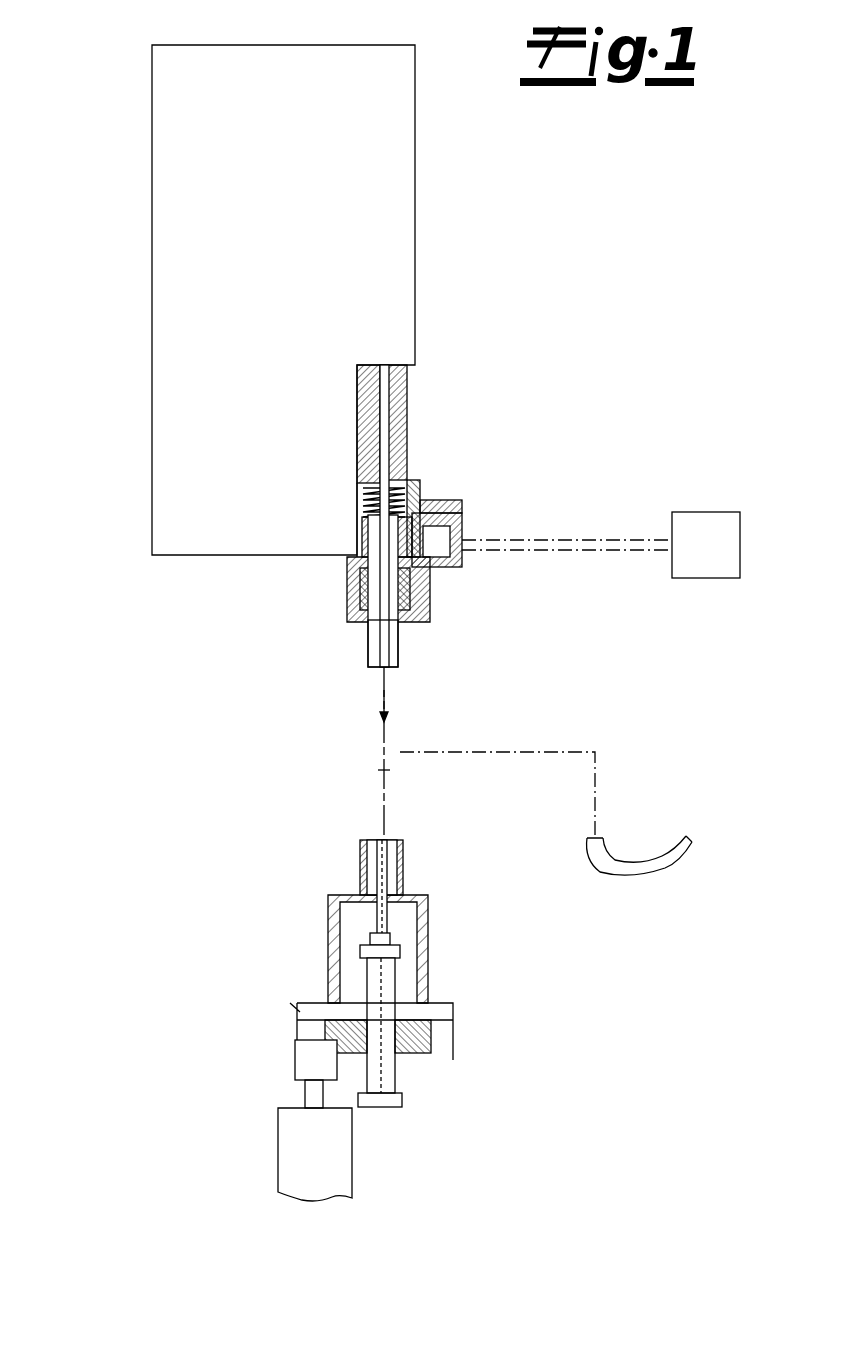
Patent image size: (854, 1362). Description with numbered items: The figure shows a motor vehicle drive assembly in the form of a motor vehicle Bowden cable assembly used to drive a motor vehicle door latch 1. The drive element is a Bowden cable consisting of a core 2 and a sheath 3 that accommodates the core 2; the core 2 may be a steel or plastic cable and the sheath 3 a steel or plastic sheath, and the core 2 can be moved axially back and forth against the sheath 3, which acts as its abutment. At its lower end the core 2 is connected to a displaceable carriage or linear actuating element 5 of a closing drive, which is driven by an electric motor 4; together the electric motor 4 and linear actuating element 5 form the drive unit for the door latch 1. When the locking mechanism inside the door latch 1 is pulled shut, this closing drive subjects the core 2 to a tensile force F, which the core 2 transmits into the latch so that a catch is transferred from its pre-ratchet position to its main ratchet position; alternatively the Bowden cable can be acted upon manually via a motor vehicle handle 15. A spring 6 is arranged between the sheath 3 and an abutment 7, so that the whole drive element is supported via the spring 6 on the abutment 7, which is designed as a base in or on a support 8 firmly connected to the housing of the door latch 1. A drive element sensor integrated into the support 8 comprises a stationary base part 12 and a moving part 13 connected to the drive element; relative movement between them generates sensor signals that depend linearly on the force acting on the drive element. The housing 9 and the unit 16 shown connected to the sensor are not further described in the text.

The motor vehicle door latch 1 is at (118, 106).
The core 2 is at (396, 646).
The sheath 3 is at (367, 656).
The electric motor 4 is at (288, 1158).
The linear actuating element 5 is at (392, 940).
The spring 6 is at (410, 476).
The abutment 7 is at (407, 452).
The support 8 is at (422, 494).
The housing 9 is at (408, 397).
The stationary base part 12 is at (462, 555).
The moving part 13 is at (425, 596).
The motor vehicle handle 15 is at (665, 882).
The evaluation unit 16 is at (726, 562).
The tensile force F is at (387, 693).